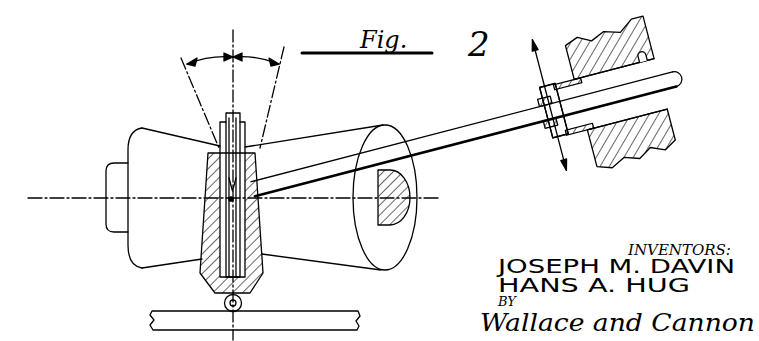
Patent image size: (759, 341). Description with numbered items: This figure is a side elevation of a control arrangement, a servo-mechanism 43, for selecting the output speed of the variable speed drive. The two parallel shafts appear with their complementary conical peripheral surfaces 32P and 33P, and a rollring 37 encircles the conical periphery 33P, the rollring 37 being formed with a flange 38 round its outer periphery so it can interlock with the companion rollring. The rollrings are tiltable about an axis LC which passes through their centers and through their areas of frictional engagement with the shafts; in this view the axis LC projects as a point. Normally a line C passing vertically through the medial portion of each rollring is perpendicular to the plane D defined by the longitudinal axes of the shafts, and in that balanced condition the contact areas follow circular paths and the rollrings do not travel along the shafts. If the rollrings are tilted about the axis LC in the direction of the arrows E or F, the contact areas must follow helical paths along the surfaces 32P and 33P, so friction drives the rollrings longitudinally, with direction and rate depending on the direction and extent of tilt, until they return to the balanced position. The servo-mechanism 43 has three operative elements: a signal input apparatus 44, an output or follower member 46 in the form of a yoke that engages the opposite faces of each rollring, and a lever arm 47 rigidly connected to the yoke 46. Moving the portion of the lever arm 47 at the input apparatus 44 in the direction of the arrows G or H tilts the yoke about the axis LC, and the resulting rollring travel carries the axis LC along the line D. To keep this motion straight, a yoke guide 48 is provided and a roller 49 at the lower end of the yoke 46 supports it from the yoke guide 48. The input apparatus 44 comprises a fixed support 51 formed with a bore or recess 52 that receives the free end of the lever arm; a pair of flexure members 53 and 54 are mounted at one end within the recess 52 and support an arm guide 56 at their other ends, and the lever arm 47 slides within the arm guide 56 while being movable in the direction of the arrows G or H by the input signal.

The conical-shaped peripheral surface 32P is at (168, 134).
The conical-shaped peripheral surface 33P is at (347, 132).
The rollring 37 is at (248, 125).
The flange 38 is at (237, 113).
The servo-mechanism 43 is at (130, 69).
The signal input apparatus 44 is at (531, 89).
The output or follower member 46 is at (212, 238).
The lever arm 47 is at (461, 122).
The yoke guide 48 is at (152, 311).
The roller 49 is at (251, 304).
The fixed support 51 is at (648, 52).
The bore or recess 52 is at (653, 75).
The flexure member 53 is at (558, 82).
The flexure member 54 is at (590, 134).
The arm guide 56 is at (537, 102).
The line CC C is at (232, 174).
The plane DD D is at (232, 199).
The arrow E is at (258, 89).
The arrow F is at (207, 89).
The arrow G is at (545, 94).
The arrow H is at (570, 180).
The axis LC is at (228, 199).